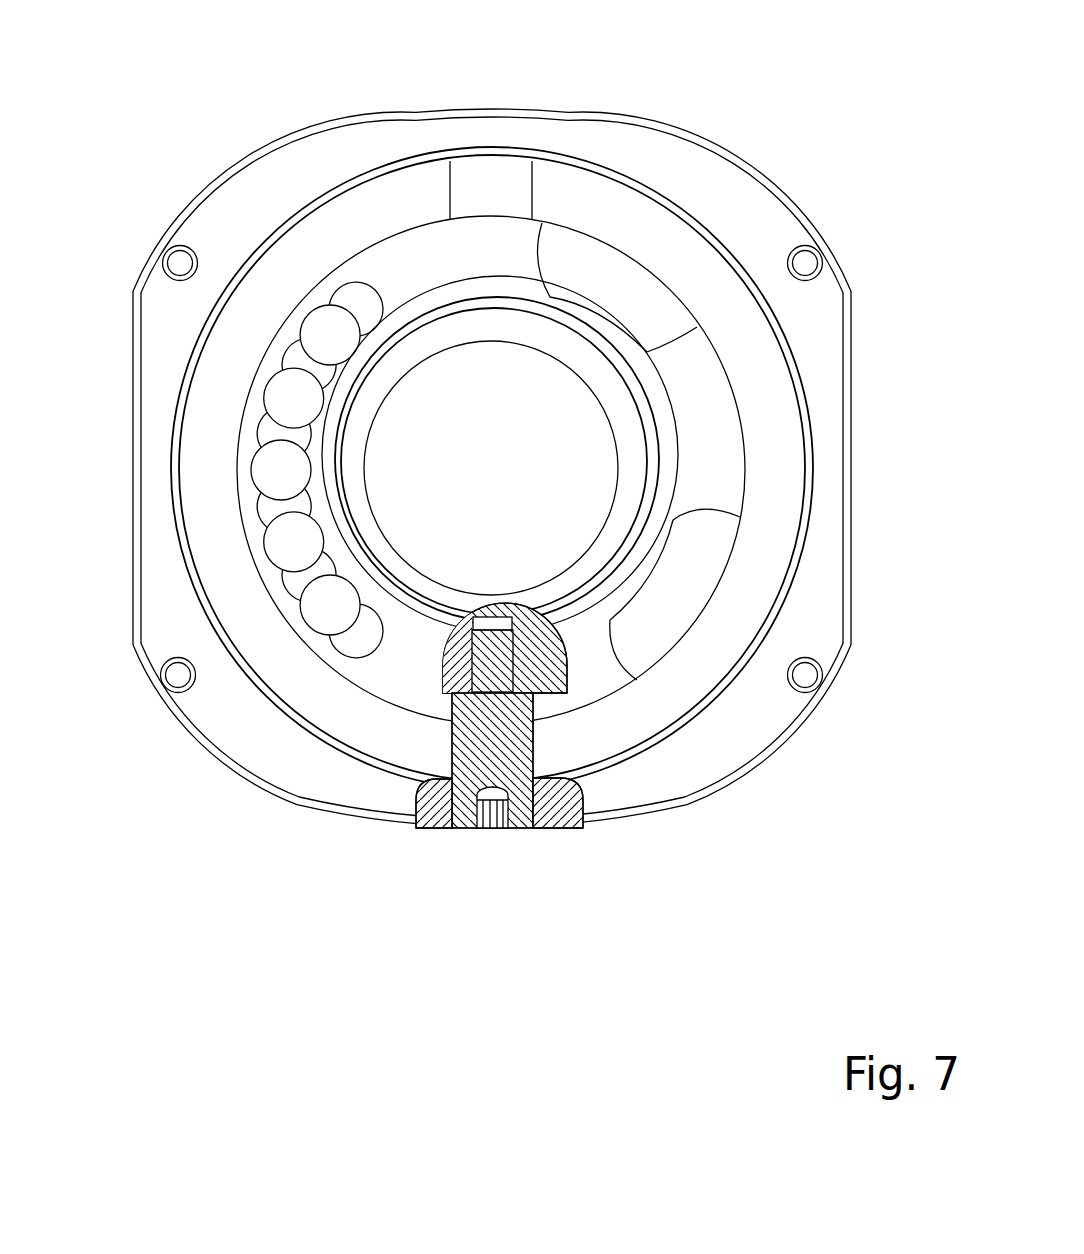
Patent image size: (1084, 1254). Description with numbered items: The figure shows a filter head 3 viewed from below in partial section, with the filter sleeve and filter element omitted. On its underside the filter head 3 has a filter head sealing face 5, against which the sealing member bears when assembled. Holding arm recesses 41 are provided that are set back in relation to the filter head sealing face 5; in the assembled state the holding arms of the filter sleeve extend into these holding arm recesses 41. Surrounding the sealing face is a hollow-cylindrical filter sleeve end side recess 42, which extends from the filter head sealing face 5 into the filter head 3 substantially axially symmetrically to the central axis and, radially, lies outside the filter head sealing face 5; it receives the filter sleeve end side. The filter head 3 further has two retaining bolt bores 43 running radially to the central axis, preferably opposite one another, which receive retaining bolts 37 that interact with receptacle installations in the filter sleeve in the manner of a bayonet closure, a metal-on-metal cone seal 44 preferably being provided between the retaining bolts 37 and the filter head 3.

The filter head 3 is at (172, 130).
The filter head sealing face 5 is at (435, 297).
The retaining bolt 37 is at (487, 175).
The holding arm recess 41 is at (617, 285).
The filter sleeve end side recess 42 is at (217, 518).
The retaining bolt bore 43 is at (528, 753).
The metal-on-metal cone seal 44 is at (450, 828).